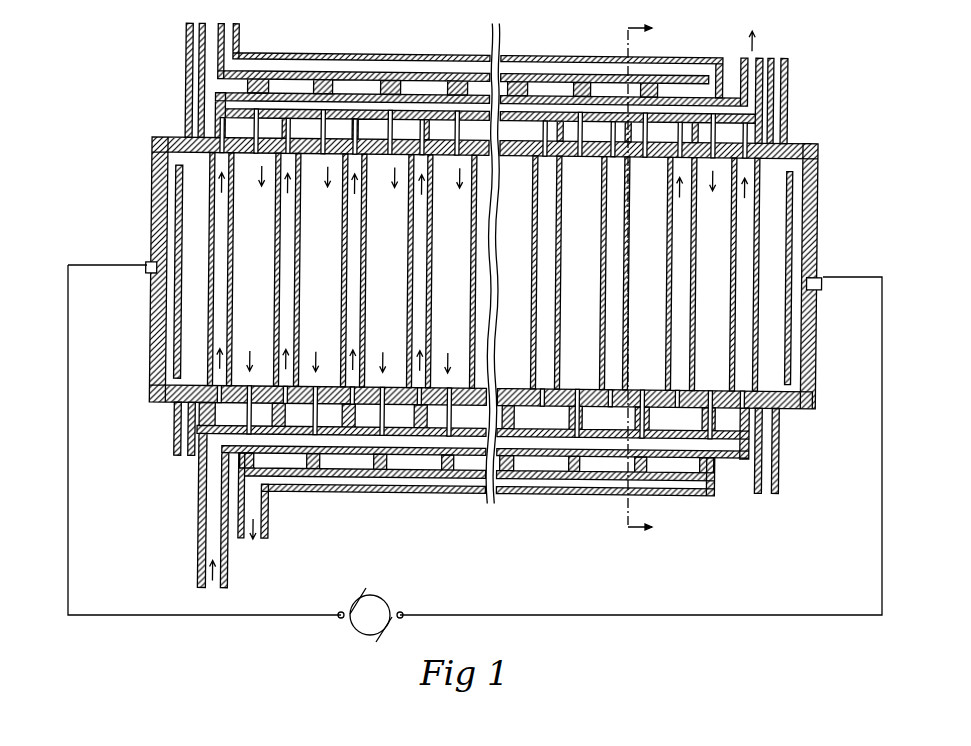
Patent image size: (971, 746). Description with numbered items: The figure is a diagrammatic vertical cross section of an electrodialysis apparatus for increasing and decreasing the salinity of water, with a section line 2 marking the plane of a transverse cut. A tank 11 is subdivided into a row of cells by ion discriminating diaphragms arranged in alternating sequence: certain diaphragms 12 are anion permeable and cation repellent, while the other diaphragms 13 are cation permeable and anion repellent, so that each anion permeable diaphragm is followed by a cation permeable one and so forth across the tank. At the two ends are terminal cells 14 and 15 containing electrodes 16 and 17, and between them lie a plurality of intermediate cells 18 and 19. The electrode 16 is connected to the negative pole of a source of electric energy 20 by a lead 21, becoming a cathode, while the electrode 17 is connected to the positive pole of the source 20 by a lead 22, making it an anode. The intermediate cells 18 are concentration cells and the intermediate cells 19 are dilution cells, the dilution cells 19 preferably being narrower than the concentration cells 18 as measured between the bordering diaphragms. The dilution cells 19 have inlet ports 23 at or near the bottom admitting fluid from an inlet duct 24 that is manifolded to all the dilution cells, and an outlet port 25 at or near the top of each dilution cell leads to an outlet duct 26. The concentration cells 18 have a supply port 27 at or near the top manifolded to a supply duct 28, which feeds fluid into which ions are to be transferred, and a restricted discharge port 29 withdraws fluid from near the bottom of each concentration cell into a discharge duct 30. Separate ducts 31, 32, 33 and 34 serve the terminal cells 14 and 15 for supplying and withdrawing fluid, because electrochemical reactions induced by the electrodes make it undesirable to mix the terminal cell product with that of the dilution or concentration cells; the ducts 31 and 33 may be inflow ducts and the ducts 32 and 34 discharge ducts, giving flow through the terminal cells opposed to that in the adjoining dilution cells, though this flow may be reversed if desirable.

The tank 11 is at (152, 397).
The anion permeable diaphragms 12 is at (234, 240).
The cation permeable diaphragms 13 is at (210, 305).
The terminal cell 14 is at (776, 294).
The terminal cell 15 is at (204, 276).
The electrode 16 is at (176, 336).
The electrode 17 is at (793, 215).
The concentration cells 18 is at (259, 281).
The dilution cells 19 is at (229, 249).
The source of electric energy 20 is at (388, 600).
The lead 21 is at (68, 512).
The lead 22 is at (882, 548).
The inlet ports 23 is at (481, 379).
The inlet duct 24 is at (228, 548).
The outlet port 25 is at (481, 158).
The outlet duct 26 is at (438, 100).
The supply port 27 is at (485, 150).
The supply duct 28 is at (408, 58).
The restricted discharge port 29 is at (250, 384).
The discharge duct 30 is at (420, 491).
The duct 31 is at (787, 80).
The duct 32 is at (780, 465).
The duct 33 is at (186, 58).
The duct 34 is at (184, 455).
The section line 2- 2 is at (650, 279).